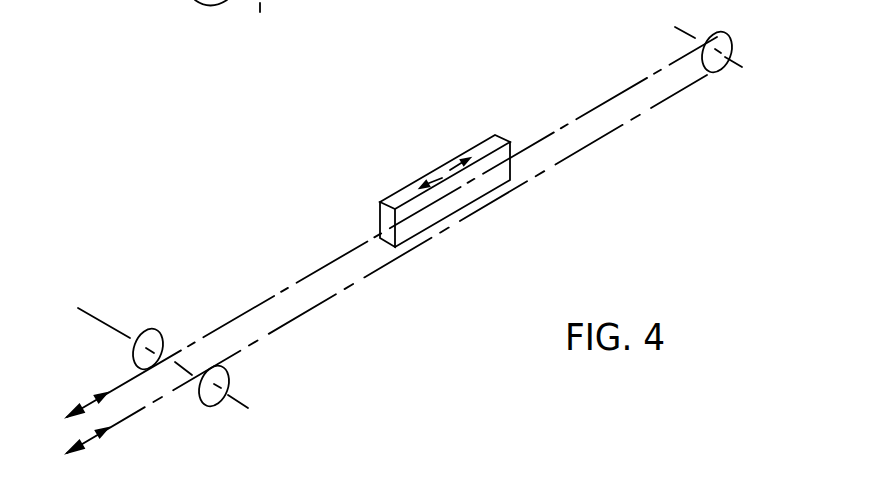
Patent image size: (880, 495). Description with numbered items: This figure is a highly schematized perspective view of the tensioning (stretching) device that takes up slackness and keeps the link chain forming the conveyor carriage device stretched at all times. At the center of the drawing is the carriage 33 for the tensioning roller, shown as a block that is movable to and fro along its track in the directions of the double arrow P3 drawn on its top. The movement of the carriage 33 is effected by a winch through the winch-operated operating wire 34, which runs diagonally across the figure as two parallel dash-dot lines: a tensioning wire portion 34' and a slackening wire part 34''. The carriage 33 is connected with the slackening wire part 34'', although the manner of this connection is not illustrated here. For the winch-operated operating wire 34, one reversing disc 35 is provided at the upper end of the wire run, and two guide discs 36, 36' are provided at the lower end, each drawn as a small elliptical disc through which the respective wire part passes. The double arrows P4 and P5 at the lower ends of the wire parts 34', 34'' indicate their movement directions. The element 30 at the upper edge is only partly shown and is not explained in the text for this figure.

The laser light source 30 is at (212, 1).
The carriage 33 is at (397, 198).
The winch-operated operating wire 34 is at (392, 239).
The tensioning wire portion 34' is at (392, 264).
The slackening wire part 34'' is at (392, 227).
The reversing disc 35 is at (718, 48).
The guide disc 36 is at (253, 385).
The guide disc 36' is at (135, 323).
The double arrow P3 is at (443, 173).
The double arrow P4 is at (90, 439).
The double arrow P5 is at (84, 408).